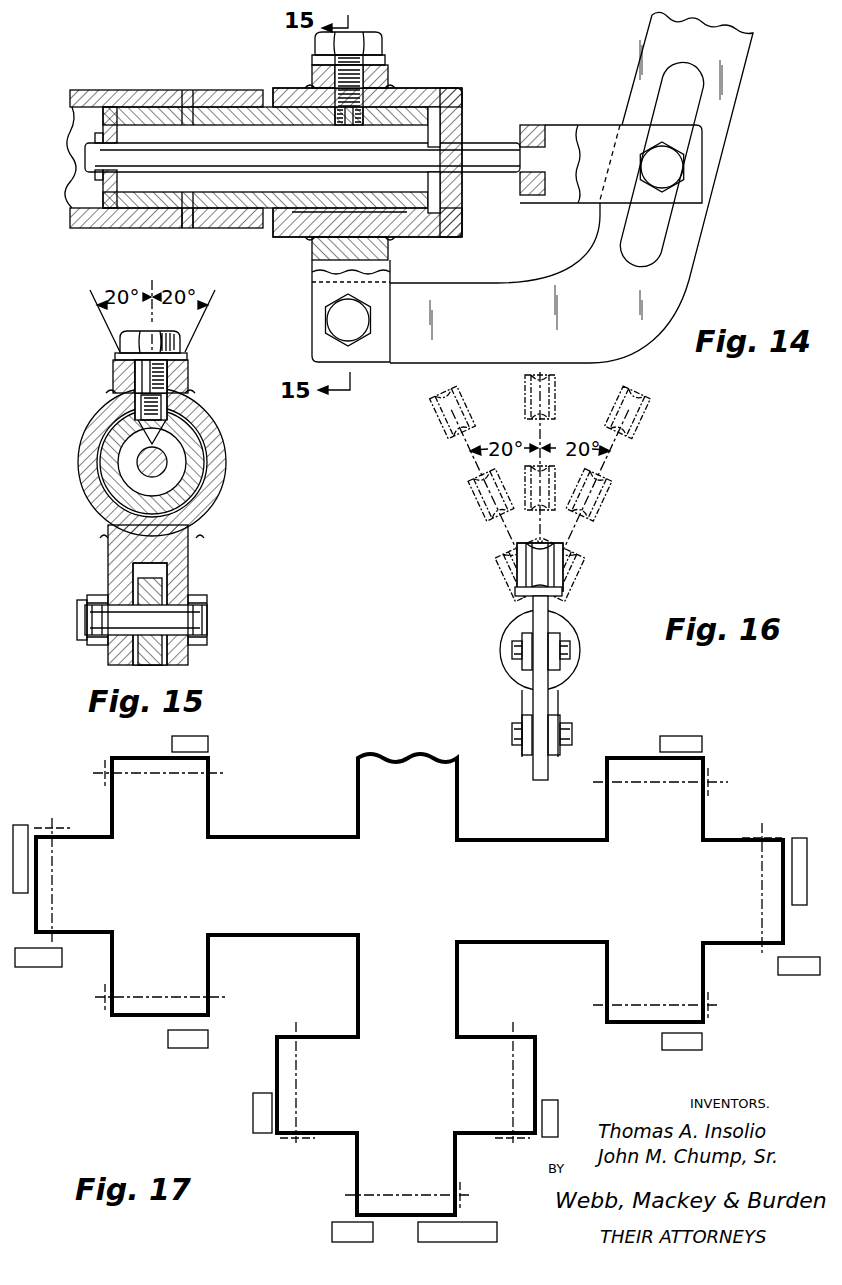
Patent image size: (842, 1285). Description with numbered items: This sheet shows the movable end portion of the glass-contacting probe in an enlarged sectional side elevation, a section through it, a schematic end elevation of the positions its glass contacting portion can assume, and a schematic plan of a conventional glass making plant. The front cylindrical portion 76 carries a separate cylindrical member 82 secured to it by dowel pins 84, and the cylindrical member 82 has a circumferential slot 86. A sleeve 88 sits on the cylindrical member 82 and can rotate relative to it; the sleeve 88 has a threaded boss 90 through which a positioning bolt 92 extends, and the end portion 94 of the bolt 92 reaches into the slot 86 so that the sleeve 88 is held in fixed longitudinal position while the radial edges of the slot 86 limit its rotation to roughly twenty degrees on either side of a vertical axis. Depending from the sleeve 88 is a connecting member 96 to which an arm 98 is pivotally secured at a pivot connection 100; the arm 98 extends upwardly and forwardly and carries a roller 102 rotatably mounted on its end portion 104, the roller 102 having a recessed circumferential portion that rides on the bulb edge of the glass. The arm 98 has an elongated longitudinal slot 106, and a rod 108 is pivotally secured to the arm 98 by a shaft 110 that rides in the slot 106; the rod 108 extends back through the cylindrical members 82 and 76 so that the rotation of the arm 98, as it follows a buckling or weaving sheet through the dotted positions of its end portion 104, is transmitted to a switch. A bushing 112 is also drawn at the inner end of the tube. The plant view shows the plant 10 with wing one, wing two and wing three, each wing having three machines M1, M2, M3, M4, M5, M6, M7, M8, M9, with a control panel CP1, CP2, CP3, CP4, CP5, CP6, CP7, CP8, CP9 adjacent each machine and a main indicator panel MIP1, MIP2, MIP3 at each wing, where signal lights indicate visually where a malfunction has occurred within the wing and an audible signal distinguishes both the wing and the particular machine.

In FIG. 14, the front cylindrical portion 76 is at (117, 90).
In FIG. 14, the cylindrical member 82 is at (243, 107).
In FIG. 15, the cylindrical member 82 is at (198, 462).
In FIG. 14, the dowel pins 84 is at (187, 230).
In FIG. 14, the circumferential slot 86 is at (341, 125).
In FIG. 15, the circumferential slot 86 is at (172, 422).
In FIG. 14, the sleeve 88 is at (445, 90).
In FIG. 15, the sleeve 88 is at (82, 474).
In FIG. 16, the sleeve 88 is at (501, 658).
In FIG. 14, the threaded boss 90 is at (389, 72).
In FIG. 15, the threaded boss 90 is at (112, 376).
In FIG. 14, the positioning bolt 92 is at (372, 47).
In FIG. 15, the positioning bolt 92 is at (121, 342).
In FIG. 14, the end portion 94 is at (357, 124).
In FIG. 15, the end portion 94 is at (135, 445).
In FIG. 14, the connecting member 96 is at (391, 266).
In FIG. 15, the connecting member 96 is at (185, 552).
In FIG. 14, the arm 98 is at (733, 115).
In FIG. 15, the arm 98 is at (150, 663).
In FIG. 16, the arm 98 is at (532, 770).
In FIG. 14, the pivot connection 100 is at (330, 318).
In FIG. 15, the pivot connection 100 is at (182, 621).
In FIG. 16, the pivot connection 100 is at (562, 733).
In FIG. 16, the roller 102 is at (545, 550).
In FIG. 16, the end portion 104 is at (560, 595).
In FIG. 14, the elongated longitudinal slot 106 is at (693, 88).
In FIG. 14, the rod 108 is at (489, 146).
In FIG. 15, the rod 108 is at (166, 458).
In FIG. 14, the shaft 110 is at (688, 163).
In FIG. 16, the shaft 110 is at (562, 653).
In FIG. 14, the end flange bushing 112 is at (119, 136).
In FIG. 17, the building wing 10 is at (299, 884).
In FIG. 17, the control panel CP1 is at (208, 744).
In FIG. 17, the control panel CP2 is at (40, 967).
In FIG. 17, the control panel CP3 is at (167, 1040).
In FIG. 17, the control panel CP4 is at (250, 1113).
In FIG. 17, the control panel CP5 is at (331, 1234).
In FIG. 17, the control panel CP6 is at (544, 1100).
In FIG. 17, the control panel CP7 is at (661, 1043).
In FIG. 17, the control panel CP8 is at (782, 976).
In FIG. 17, the control panel CP9 is at (702, 744).
In FIG. 17, the machine M1 is at (173, 776).
In FIG. 17, the machine M2 is at (53, 868).
In FIG. 17, the machine M3 is at (158, 998).
In FIG. 17, the machine M4 is at (299, 1093).
In FIG. 17, the machine M5 is at (420, 1194).
In FIG. 17, the machine M6 is at (510, 1093).
In FIG. 17, the machine M7 is at (664, 1004).
In FIG. 17, the machine M8 is at (760, 898).
In FIG. 17, the machine M9 is at (667, 783).
In FIG. 17, the main indicator panel MIP1 is at (20, 824).
In FIG. 17, the main indicator panel MIP2 is at (497, 1233).
In FIG. 17, the main indicator panel MIP3 is at (800, 836).